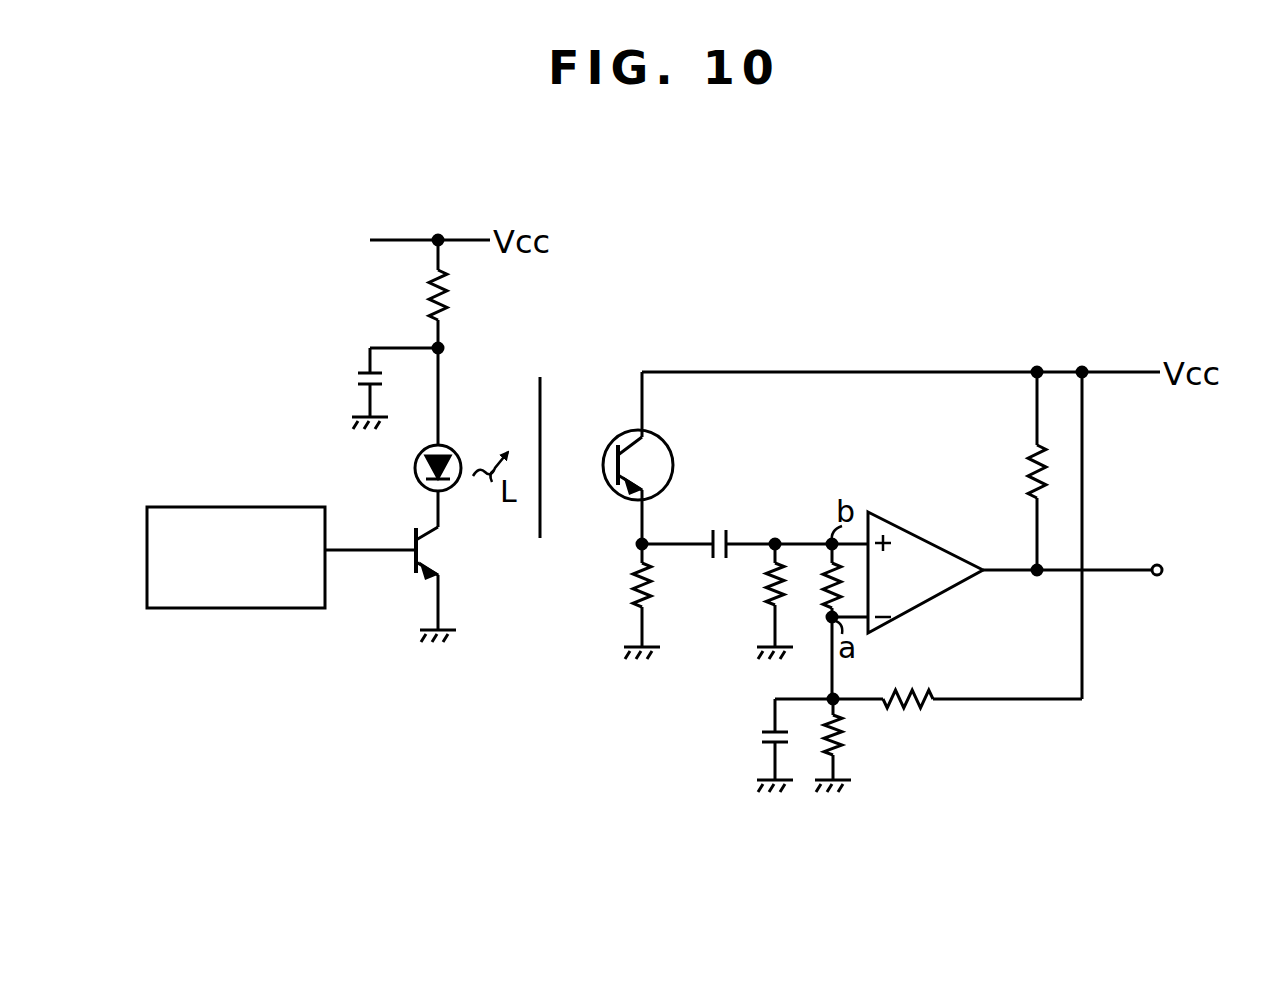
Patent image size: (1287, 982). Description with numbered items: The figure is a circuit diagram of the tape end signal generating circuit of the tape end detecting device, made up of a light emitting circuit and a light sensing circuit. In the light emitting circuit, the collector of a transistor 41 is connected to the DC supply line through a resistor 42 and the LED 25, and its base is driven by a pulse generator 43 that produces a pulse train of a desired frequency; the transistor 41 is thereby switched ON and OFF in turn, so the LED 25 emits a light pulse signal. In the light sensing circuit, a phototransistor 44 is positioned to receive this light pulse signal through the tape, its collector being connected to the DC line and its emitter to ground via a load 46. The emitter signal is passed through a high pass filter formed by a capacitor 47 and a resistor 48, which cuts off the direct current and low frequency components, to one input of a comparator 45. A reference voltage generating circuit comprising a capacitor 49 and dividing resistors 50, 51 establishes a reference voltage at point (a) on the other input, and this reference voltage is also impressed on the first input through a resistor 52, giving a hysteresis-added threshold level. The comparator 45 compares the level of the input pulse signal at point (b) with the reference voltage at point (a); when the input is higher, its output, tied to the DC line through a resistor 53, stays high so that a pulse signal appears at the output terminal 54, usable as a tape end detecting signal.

The LED 25 is at (416, 470).
The transistor 41 is at (430, 548).
The resistor 42 is at (450, 298).
The pulse generator 43 is at (216, 608).
The phototransistor 44 is at (668, 455).
The comparator 45 is at (928, 597).
The load 46 is at (634, 596).
The capacitor 47 is at (719, 560).
The resistor 48 is at (762, 596).
The capacitor 49 is at (758, 740).
The dividing resistor 50 is at (904, 708).
The dividing resistor 51 is at (842, 740).
The resistor 52 is at (820, 577).
The resistor 53 is at (1024, 470).
The output terminal 54 is at (1156, 566).